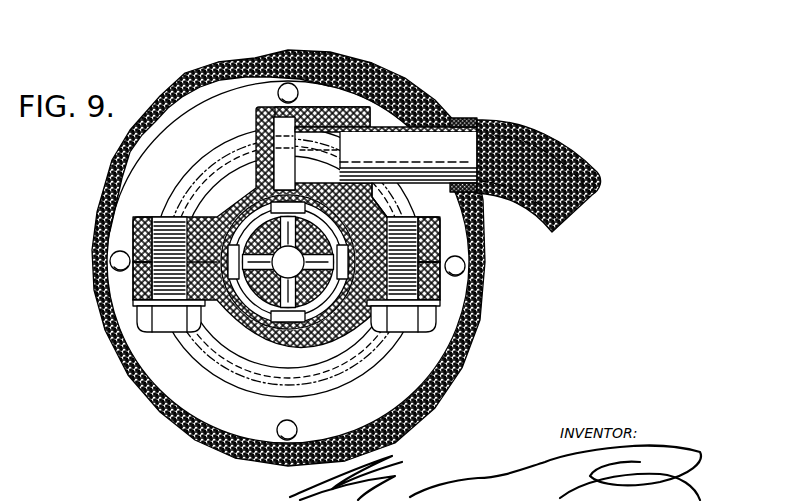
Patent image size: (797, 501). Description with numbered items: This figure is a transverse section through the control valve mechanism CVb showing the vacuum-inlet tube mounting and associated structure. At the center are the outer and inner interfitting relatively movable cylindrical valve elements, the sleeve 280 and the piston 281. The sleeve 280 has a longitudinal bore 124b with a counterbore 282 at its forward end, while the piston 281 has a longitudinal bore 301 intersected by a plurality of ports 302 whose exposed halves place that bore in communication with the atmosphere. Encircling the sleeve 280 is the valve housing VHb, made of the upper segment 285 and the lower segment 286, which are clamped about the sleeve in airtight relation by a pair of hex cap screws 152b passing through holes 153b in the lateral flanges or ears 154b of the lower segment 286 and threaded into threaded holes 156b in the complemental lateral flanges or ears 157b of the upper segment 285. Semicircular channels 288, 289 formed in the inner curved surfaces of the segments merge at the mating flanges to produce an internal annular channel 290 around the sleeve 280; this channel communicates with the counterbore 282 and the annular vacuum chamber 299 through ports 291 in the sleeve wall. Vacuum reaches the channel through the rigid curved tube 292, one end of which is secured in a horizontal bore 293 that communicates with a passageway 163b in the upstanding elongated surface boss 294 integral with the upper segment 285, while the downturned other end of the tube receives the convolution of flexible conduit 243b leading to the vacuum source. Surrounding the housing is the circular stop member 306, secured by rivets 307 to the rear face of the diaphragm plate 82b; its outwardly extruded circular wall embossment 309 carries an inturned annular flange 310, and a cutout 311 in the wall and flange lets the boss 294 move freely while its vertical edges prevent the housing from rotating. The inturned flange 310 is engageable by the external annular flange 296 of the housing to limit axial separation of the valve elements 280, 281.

The cutout 311 is at (250, 190).
The surface boss 294 is at (262, 92).
The passageway 163b is at (292, 123).
The control valve mechanism CVb is at (317, 98).
The horizontal bore 293 is at (340, 108).
The diaphragm plate 82b is at (403, 93).
The rigid curved tube 292 is at (403, 137).
The flexible conduit 243b is at (507, 135).
The ports 291 is at (232, 205).
The semicircular channel 288 is at (238, 205).
The annular vacuum chamber 299 is at (215, 212).
The upper segment 285 is at (133, 218).
The threaded holes 156b is at (133, 222).
The hex cap screws 152b is at (133, 237).
The lateral flanges or ears 157b is at (110, 261).
The lateral flanges or ears 154b is at (133, 298).
The holes 153b is at (138, 326).
The longitudinal bore 124b is at (220, 334).
The valve housing VHb is at (136, 389).
The piston 281 is at (160, 396).
The lower segment 286 is at (178, 417).
The circular stop member 306 is at (207, 409).
The inturned annular flange 310 is at (243, 442).
The rivets 307 is at (281, 428).
The semicircular channel 289 is at (270, 373).
The ports 302 is at (303, 349).
The sleeve 280 is at (333, 346).
The longitudinal bore 301 is at (356, 386).
The internal annular channel 290 is at (352, 357).
The annular flange 296 is at (373, 350).
The circular wall embossment 309 is at (398, 341).
The counterbore 282 is at (368, 221).